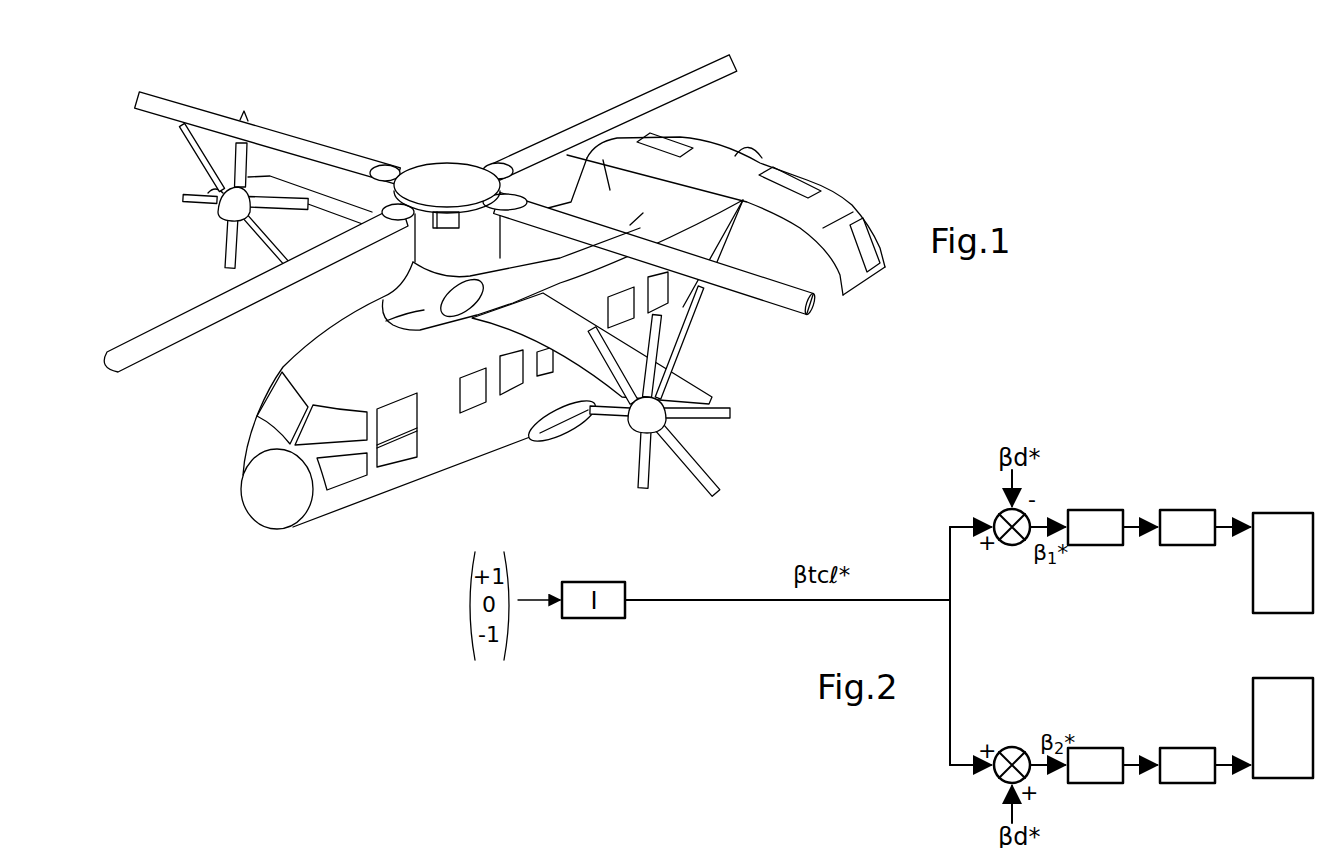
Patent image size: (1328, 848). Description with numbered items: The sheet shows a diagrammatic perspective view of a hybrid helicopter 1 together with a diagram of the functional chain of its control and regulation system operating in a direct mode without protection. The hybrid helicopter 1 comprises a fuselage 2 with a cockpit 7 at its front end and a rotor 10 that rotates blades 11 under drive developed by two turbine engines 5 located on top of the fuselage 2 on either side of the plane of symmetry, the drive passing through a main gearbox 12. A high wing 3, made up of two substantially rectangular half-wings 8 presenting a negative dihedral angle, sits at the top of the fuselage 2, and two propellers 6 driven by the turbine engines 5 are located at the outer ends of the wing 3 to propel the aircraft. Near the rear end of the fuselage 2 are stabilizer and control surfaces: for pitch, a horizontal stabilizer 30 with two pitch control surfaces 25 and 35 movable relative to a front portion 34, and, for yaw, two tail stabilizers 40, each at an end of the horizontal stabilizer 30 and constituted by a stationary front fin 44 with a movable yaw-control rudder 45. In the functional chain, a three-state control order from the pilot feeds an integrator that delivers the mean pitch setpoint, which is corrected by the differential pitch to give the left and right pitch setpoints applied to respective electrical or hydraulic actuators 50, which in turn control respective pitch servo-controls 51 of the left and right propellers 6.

In FIG. 1, the hybrid helicopter 1 is at (549, 474).
In FIG. 1, the fuselage 2 is at (479, 345).
In FIG. 1, the high wing 3 is at (468, 248).
In FIG. 1, the turbine engines 5 is at (405, 152).
In FIG. 1, the propellers 6 is at (195, 200).
In FIG. 2, the propellers 6 is at (1283, 645).
In FIG. 1, the cockpit 7 is at (265, 396).
In FIG. 1, the half-wings 8 is at (274, 188).
In FIG. 1, the rotor 10 is at (465, 225).
In FIG. 1, the blades 11 is at (143, 338).
In FIG. 1, the main gearbox 12 is at (452, 222).
In FIG. 1, the pitch control surface 25 is at (680, 147).
In FIG. 1, the horizontal stabilizer 30 is at (726, 217).
In FIG. 1, the front portion 34 is at (797, 206).
In FIG. 1, the pitch control surface 35 is at (790, 174).
In FIG. 1, the tail stabilizers 40 is at (837, 241).
In FIG. 1, the stationary front portions (fins) 44 is at (850, 282).
In FIG. 1, the yaw-control rudders 45 is at (860, 242).
In FIG. 2, the actuators 50 is at (1095, 646).
In FIG. 2, the pitch servo-controls 51 is at (1187, 646).